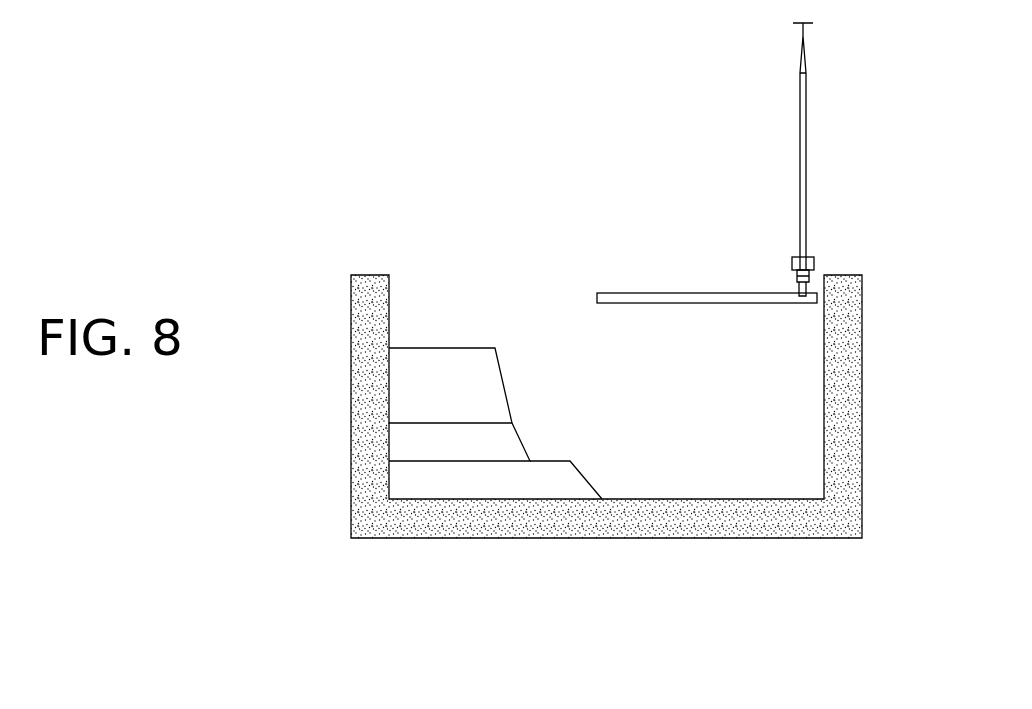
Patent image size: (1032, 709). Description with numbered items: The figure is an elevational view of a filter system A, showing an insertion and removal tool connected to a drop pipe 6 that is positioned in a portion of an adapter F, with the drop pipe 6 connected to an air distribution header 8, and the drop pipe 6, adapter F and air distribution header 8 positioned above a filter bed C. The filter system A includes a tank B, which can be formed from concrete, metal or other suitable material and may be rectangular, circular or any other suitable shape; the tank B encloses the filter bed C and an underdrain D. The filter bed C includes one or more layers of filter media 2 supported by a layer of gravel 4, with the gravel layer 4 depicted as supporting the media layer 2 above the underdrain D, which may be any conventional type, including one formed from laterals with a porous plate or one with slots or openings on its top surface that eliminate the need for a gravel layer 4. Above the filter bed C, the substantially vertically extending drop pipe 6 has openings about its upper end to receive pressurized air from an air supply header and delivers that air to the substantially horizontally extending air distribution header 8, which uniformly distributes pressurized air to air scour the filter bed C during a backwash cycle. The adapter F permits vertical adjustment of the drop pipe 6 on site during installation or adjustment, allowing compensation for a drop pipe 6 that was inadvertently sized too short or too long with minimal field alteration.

The filter media 2 is at (498, 358).
The layer of gravel 4 is at (528, 447).
The underdrain D is at (585, 478).
The drop pipe 6 is at (800, 182).
The air distribution header 8 is at (728, 298).
The filter system A is at (554, 280).
The tank B is at (367, 318).
The filter bed C is at (546, 356).
The adapter F is at (822, 262).